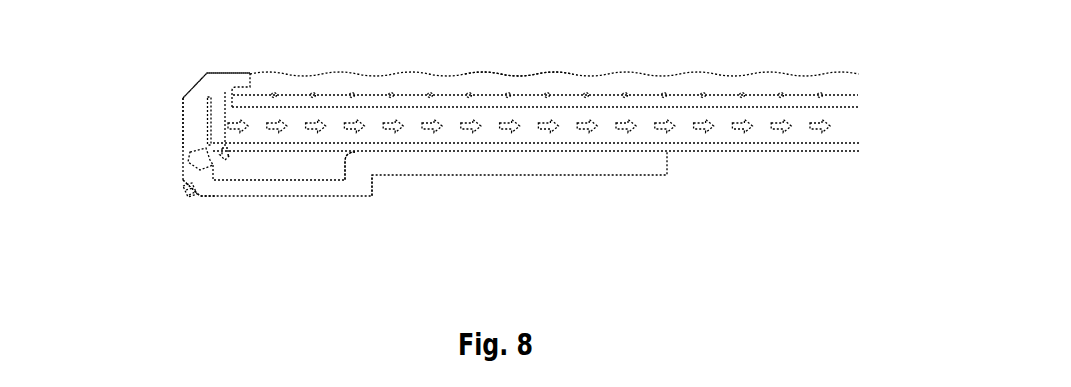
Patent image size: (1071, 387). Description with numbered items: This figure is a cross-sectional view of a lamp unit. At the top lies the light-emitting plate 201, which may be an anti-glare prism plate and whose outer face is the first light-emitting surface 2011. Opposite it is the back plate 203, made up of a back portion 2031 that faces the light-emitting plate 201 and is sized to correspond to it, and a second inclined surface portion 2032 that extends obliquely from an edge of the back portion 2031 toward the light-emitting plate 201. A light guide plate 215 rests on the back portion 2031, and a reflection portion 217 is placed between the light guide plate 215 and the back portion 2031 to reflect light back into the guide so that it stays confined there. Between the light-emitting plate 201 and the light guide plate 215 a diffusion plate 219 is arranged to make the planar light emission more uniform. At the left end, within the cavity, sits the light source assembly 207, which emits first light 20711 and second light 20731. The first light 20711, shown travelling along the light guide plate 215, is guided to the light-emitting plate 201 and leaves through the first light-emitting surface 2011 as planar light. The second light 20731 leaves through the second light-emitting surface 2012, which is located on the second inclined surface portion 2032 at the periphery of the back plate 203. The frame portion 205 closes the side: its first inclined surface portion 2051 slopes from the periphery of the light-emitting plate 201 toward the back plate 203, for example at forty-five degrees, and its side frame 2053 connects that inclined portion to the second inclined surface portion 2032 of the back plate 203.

The light-emitting plate 201 is at (838, 84).
The first light-emitting surface 2011 is at (511, 74).
The diffusion plate 219 is at (840, 101).
The first light 20711 is at (832, 126).
The light guide plate 215 is at (835, 134).
The reflection portion 217 is at (845, 151).
The back plate 203 is at (548, 175).
The back portion 2031 is at (343, 188).
The second light-emitting surface 2012 is at (200, 196).
The frame portion 205 is at (76, 72).
The first inclined surface portion 2051 is at (190, 90).
The side frame 2053 is at (185, 118).
The light source assembly 207 is at (216, 122).
The second light 20731 is at (190, 160).
The second inclined surface portion 2032 is at (184, 187).